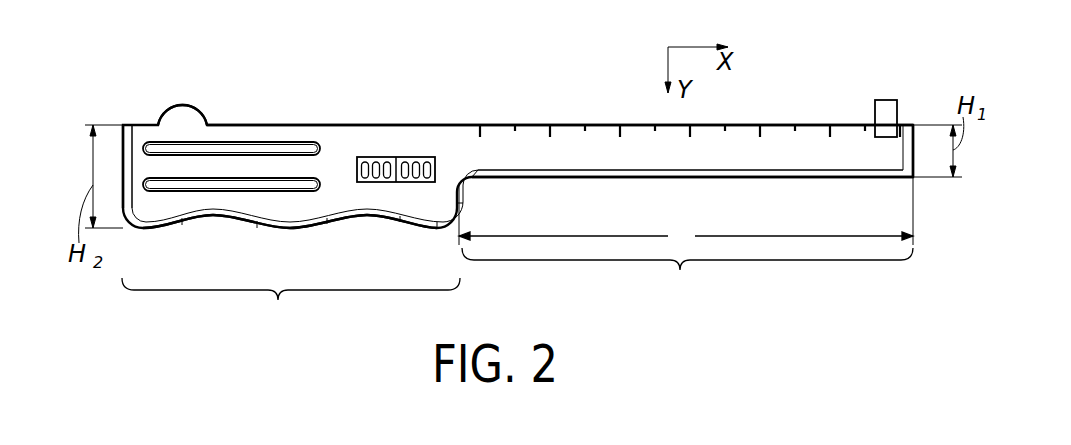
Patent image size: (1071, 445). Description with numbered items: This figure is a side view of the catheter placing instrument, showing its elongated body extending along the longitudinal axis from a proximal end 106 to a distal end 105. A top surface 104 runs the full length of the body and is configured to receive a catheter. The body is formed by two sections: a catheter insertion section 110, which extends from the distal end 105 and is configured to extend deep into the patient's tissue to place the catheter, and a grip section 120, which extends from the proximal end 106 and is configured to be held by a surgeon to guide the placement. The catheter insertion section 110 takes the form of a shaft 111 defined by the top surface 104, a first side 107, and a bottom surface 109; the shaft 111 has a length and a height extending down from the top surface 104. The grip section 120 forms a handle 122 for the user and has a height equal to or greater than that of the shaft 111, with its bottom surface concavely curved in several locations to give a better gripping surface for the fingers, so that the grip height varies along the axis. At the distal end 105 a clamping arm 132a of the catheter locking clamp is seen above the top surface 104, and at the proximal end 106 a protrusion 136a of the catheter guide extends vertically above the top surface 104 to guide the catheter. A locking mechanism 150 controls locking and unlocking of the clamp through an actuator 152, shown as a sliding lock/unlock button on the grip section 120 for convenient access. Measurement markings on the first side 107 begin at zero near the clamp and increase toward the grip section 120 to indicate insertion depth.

The top surface 104 is at (302, 125).
The distal end 105 is at (913, 148).
The proximal end 106 is at (123, 158).
The first side 107 is at (797, 158).
The bottom surface 109 is at (538, 178).
The catheter insertion section 110 is at (686, 239).
The shaft 111 is at (641, 163).
The grip section 120 is at (292, 239).
The handle 122 is at (320, 232).
The clamping arm 132a is at (885, 100).
The protrusion 136a is at (181, 101).
The locking mechanism 150 is at (447, 124).
The actuator 152 is at (396, 157).